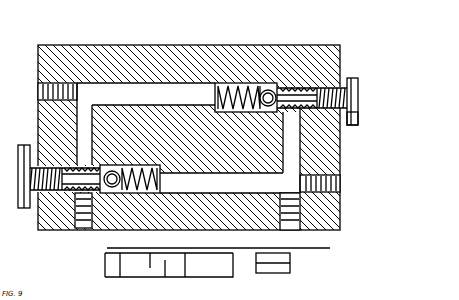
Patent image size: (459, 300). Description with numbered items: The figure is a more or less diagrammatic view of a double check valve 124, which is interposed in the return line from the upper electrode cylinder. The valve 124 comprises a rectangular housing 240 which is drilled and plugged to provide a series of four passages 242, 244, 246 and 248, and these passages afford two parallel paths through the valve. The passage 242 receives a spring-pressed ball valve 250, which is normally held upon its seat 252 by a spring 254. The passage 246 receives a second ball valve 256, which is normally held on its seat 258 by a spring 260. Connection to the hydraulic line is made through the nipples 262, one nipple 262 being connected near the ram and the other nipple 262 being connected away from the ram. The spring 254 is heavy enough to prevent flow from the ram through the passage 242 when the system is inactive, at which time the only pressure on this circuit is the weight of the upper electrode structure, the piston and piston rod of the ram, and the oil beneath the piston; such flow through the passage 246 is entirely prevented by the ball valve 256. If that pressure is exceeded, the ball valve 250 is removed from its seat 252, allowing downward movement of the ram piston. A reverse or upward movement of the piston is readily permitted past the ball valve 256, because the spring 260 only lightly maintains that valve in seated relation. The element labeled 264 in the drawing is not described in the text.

The rectangular housing 240 is at (195, 60).
The passage 242 is at (125, 88).
The passage 244 is at (92, 125).
The passage 246 is at (228, 188).
The passage 248 is at (287, 147).
The spring-pressed ball valve 250 is at (259, 82).
The seat 252 is at (282, 92).
The spring 254 is at (243, 110).
The ball valve 256 is at (139, 208).
The seat 258 is at (78, 192).
The spring 260 is at (152, 193).
The nipple 262 is at (340, 120).
The screw head 264 is at (28, 143).
The valve 124 is at (339, 192).